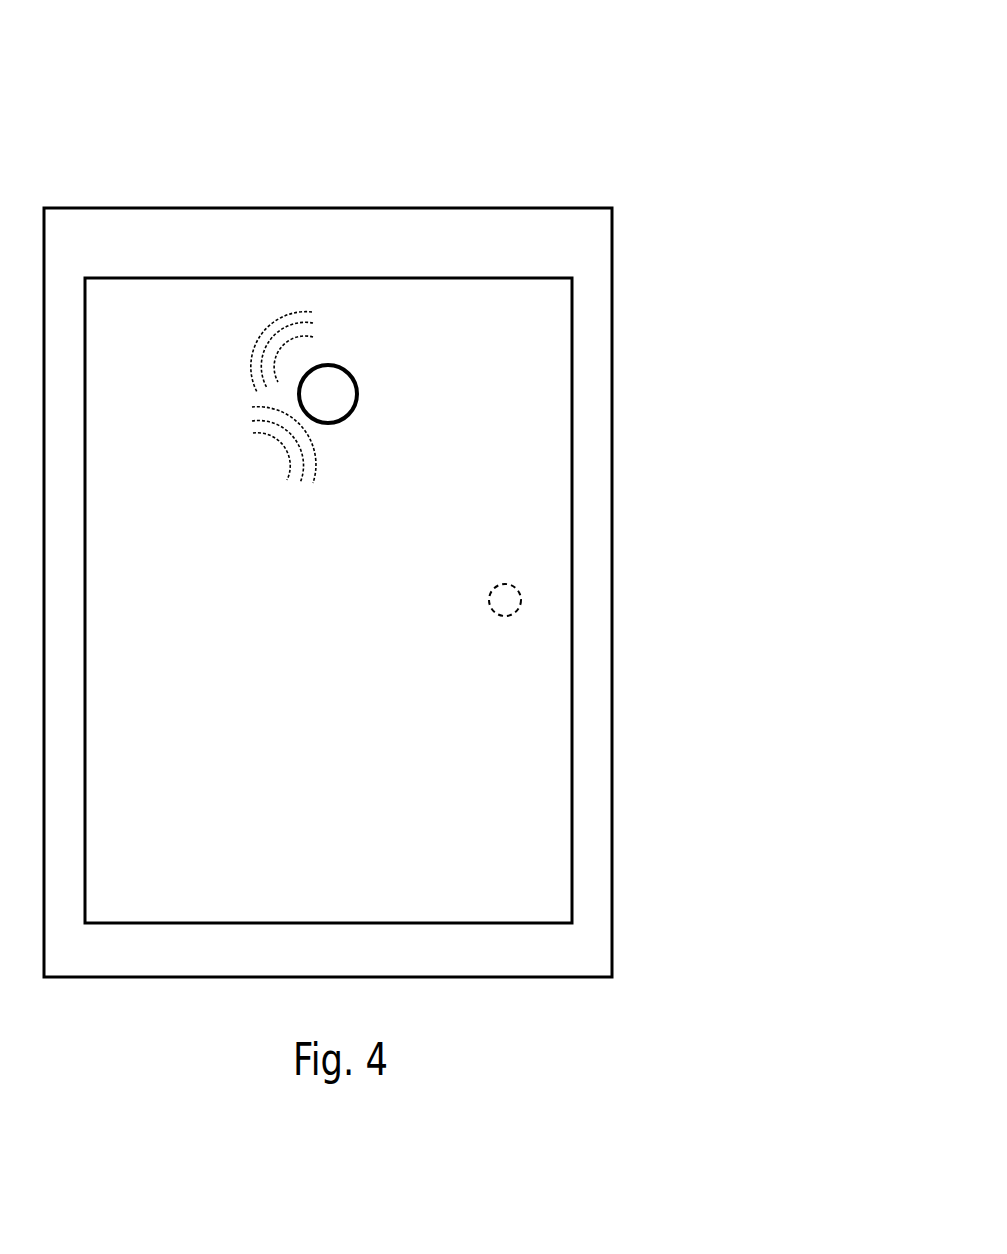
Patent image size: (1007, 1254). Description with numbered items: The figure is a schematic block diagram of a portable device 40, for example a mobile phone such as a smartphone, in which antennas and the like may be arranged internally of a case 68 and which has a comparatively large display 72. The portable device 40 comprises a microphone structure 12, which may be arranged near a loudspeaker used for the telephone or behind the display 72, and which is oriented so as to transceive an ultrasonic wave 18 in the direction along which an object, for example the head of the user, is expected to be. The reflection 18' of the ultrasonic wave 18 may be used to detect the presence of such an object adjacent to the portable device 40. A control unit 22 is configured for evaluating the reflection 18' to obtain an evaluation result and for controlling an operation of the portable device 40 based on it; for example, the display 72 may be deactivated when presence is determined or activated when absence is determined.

The portable device 40 is at (612, 113).
The case 68 is at (612, 350).
The display 72 is at (560, 433).
The microphone structure 12 is at (331, 382).
The ultrasonic wave 18 is at (282, 307).
The reflection 18' is at (284, 488).
The control unit 22 is at (515, 600).